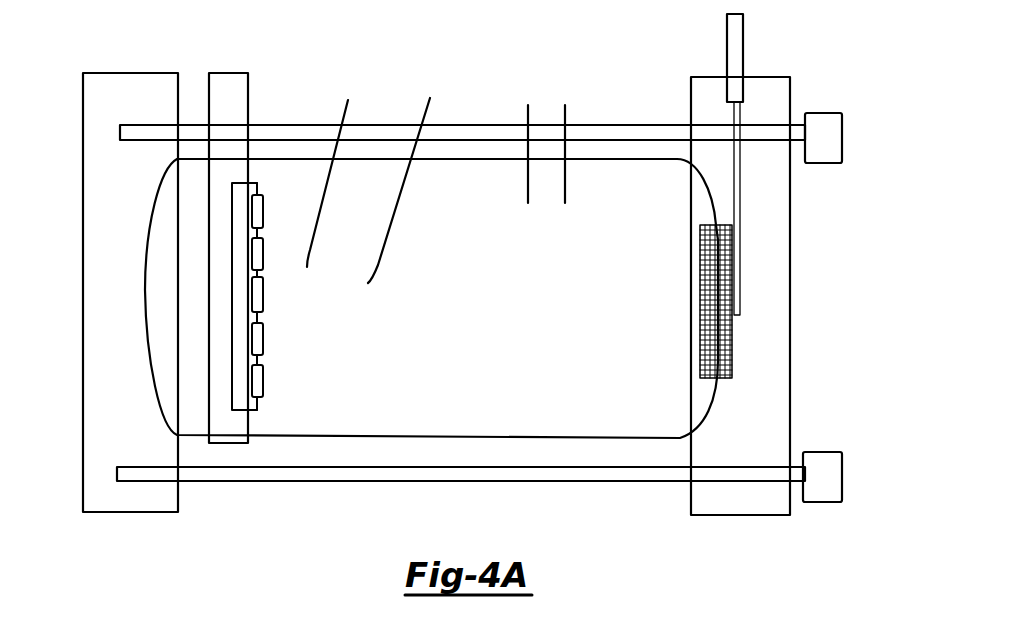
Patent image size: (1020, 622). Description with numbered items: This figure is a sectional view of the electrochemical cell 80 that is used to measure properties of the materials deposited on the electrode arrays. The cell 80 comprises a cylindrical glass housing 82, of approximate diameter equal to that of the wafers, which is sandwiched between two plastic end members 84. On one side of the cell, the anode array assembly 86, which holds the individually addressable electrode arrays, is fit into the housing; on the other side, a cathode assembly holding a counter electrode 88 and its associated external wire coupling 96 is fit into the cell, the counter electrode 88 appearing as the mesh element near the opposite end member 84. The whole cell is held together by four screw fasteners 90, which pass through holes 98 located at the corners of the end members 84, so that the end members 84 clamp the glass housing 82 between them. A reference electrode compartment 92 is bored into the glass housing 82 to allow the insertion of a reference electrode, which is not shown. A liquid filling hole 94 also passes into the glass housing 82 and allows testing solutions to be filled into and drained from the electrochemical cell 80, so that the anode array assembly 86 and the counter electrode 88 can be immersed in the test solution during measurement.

The cell 80 is at (190, 50).
The cylindrical glass housing 82 is at (465, 420).
The plastic end members 84 is at (100, 235).
The anode array assembly 86 is at (232, 88).
The counter electrode 88 is at (720, 337).
The screw fasteners 90 is at (843, 125).
The reference electrode compartment 92 is at (365, 173).
The liquid filling hole 94 is at (547, 178).
The external wire coupling 96 is at (745, 36).
The holes 98 is at (795, 477).